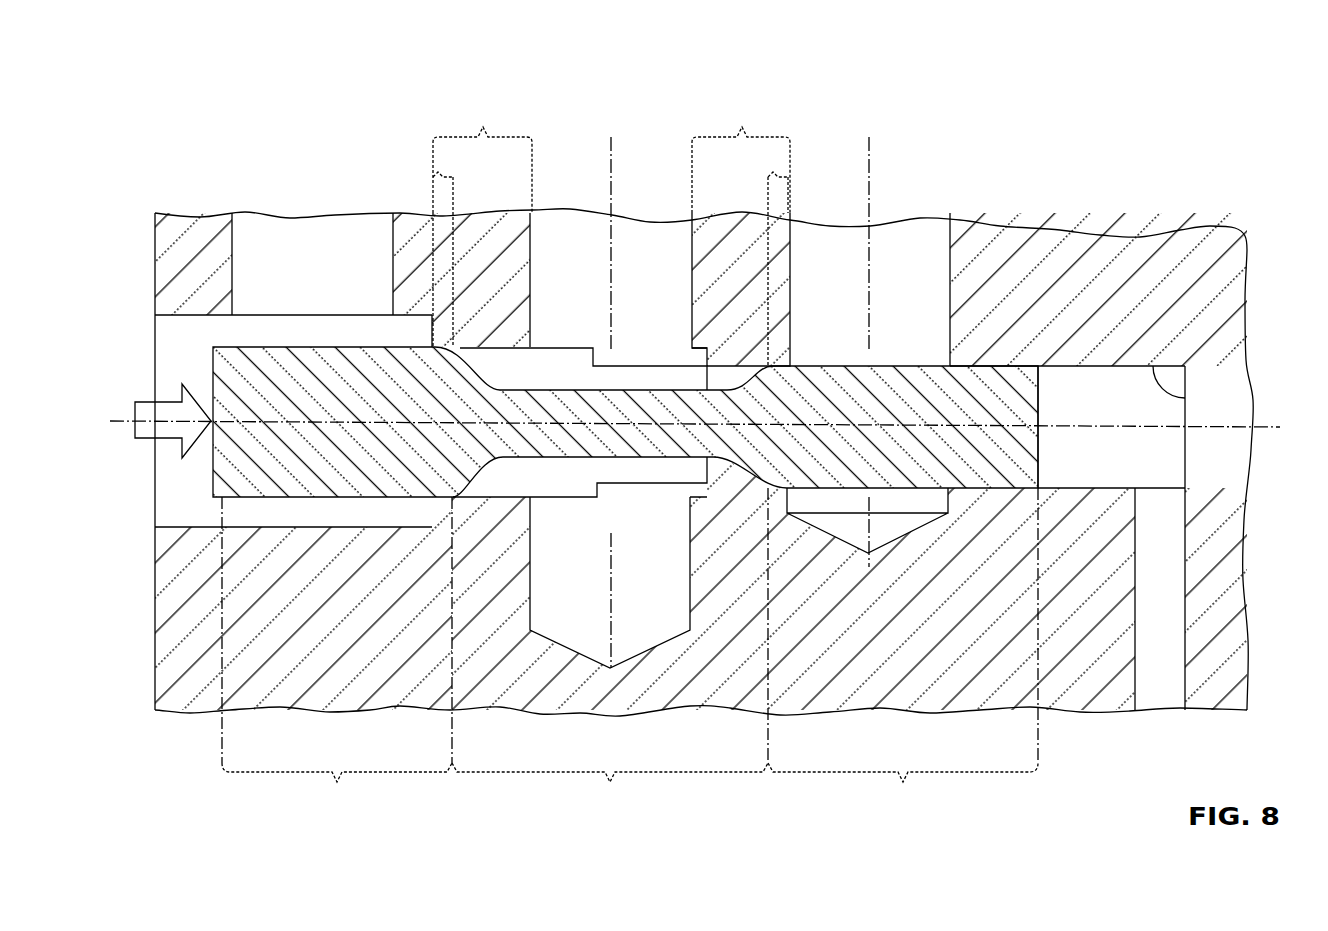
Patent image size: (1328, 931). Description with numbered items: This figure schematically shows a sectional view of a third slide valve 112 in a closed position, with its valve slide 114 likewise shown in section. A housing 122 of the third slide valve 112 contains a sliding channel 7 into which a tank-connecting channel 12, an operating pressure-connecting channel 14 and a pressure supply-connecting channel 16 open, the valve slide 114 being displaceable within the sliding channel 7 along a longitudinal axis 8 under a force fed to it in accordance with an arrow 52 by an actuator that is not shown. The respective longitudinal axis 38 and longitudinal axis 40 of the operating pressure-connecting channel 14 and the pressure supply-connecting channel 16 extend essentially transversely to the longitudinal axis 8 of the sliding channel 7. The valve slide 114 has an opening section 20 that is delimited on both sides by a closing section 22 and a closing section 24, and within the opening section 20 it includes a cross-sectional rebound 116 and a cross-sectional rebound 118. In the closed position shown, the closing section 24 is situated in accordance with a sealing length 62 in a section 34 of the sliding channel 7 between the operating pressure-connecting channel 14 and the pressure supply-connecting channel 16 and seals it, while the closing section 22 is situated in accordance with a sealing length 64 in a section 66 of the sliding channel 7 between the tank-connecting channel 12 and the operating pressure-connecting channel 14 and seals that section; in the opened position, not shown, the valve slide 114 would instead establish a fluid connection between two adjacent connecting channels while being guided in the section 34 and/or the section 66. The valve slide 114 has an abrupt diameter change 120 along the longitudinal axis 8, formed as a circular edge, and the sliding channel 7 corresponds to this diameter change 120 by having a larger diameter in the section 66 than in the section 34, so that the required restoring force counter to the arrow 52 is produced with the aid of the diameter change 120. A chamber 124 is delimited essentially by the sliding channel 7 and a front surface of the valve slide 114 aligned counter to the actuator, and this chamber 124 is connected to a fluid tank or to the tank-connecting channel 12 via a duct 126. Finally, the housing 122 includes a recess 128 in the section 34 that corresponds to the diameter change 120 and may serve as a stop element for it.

The sliding channel 7 is at (1187, 395).
The longitudinal axis 8 is at (1270, 440).
The tank-connecting channel 12 is at (309, 240).
The operating pressure-connecting channel 14 is at (568, 232).
The pressure supply-connecting channel 16 is at (925, 247).
The opening section 20 is at (610, 783).
The closing section 22 is at (337, 783).
The closing section 24 is at (903, 783).
The section of sliding channel 34 is at (742, 128).
The longitudinal axis 38 is at (612, 168).
The longitudinal axis 40 is at (870, 170).
The arrow 52 is at (172, 405).
The sealing length 62 is at (778, 177).
The sealing length 64 is at (437, 176).
The section of sliding channel 66 is at (483, 127).
The third slide valve 112 is at (1197, 156).
The valve slide 114 is at (983, 393).
The cross-sectional rebound 116 is at (556, 365).
The cross-sectional rebound 118 is at (553, 480).
The abrupt diameter change 120 is at (620, 336).
The housing 122 is at (1088, 273).
The chamber 124 is at (1160, 468).
The duct 126 is at (1160, 566).
The recess 128 is at (680, 345).